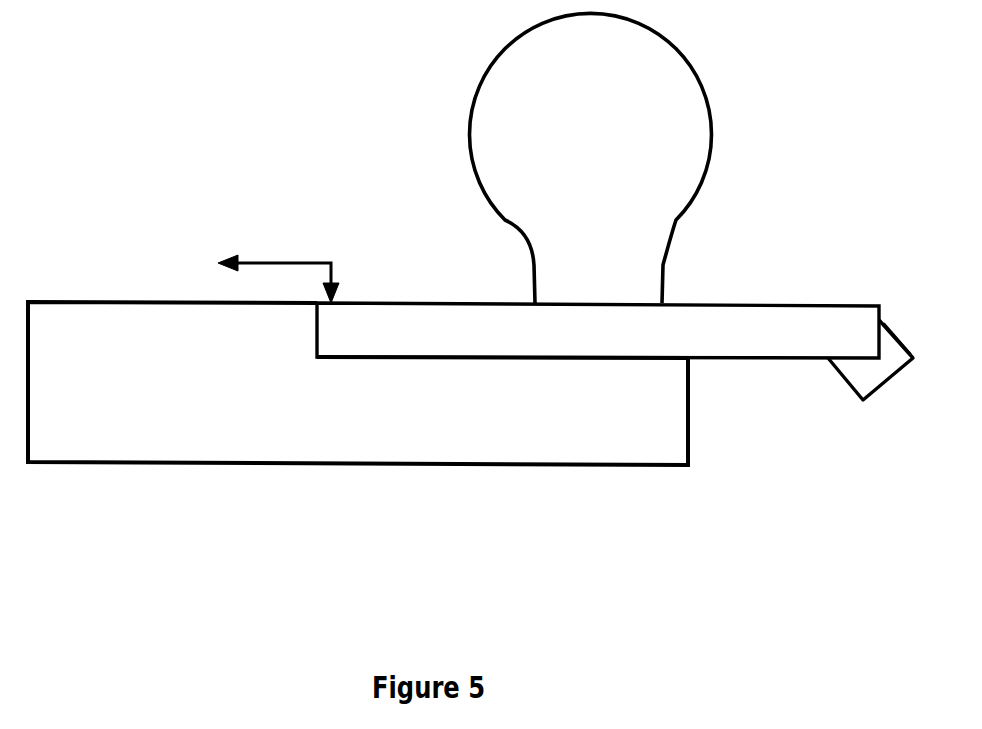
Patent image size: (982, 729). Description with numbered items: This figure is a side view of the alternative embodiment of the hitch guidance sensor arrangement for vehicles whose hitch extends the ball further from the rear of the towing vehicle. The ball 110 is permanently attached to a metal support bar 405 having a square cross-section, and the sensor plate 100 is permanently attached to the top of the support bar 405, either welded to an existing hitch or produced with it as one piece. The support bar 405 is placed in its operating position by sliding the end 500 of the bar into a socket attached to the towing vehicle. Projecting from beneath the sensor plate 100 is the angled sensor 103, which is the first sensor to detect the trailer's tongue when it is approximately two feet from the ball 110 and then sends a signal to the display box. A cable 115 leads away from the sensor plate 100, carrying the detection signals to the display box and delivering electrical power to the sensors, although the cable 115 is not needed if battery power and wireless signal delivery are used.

The sensor plate 100 is at (785, 320).
The angled sensor 103 is at (850, 372).
The ball 110 is at (583, 78).
The cable 115 is at (288, 262).
The support bar 405 is at (378, 420).
The end of the support bar 500 is at (28, 408).